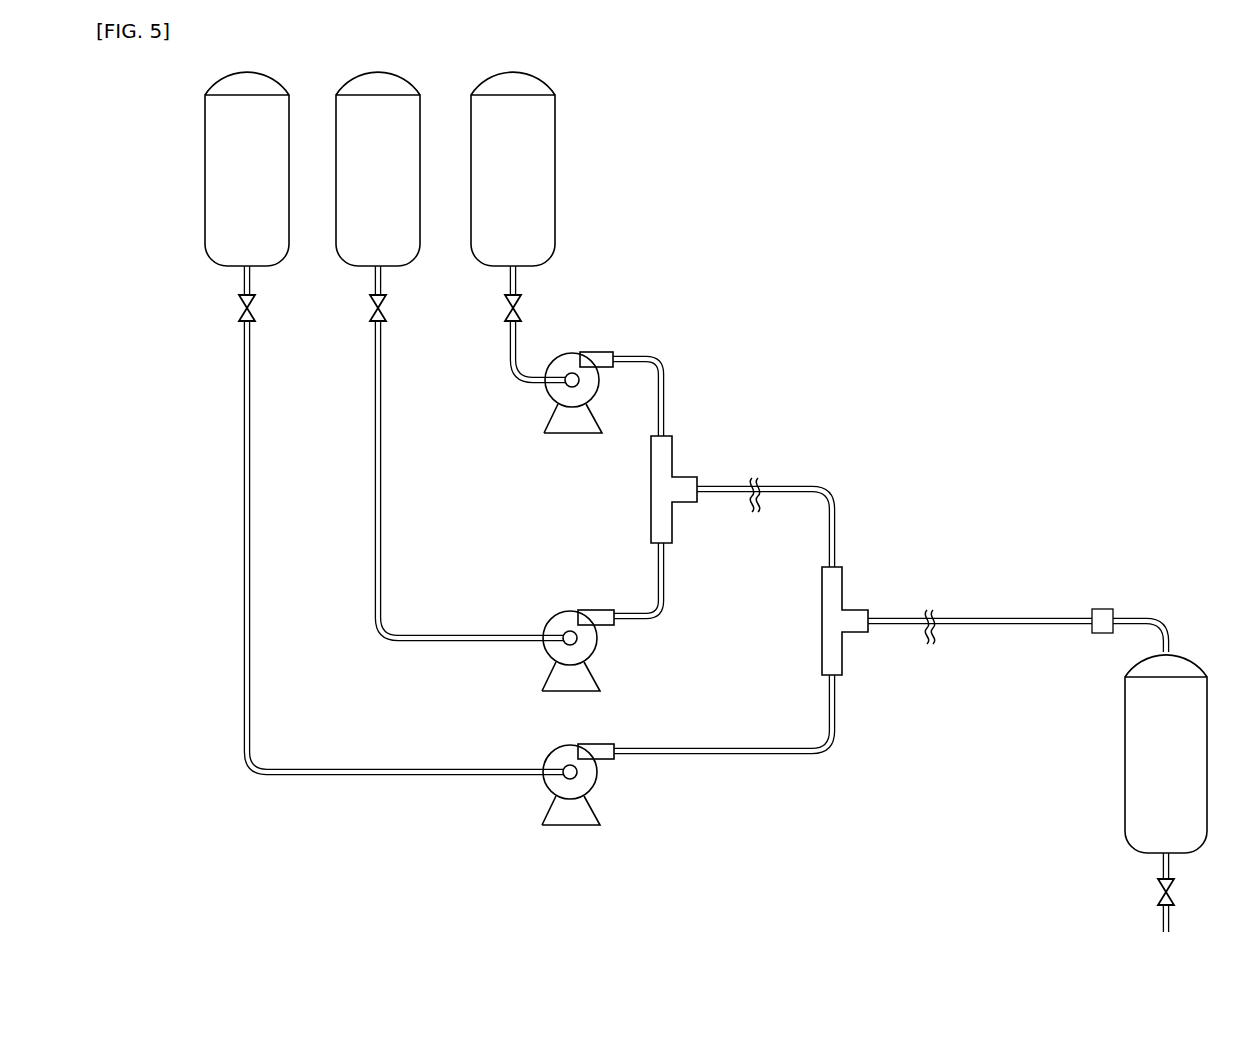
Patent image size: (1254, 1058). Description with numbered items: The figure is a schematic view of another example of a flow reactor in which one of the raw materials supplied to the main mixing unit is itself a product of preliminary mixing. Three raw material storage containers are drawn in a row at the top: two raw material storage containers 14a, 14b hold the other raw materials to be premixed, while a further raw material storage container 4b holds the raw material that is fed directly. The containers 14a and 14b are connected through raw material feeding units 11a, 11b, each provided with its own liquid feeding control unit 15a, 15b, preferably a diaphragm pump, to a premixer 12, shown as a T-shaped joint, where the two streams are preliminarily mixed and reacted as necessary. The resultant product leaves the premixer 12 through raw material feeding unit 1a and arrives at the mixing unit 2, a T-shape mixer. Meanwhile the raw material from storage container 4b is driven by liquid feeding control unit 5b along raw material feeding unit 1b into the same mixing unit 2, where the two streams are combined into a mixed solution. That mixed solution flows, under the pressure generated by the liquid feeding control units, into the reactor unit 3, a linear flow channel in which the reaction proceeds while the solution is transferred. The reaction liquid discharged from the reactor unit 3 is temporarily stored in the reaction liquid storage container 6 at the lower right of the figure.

The raw material feeding unit 1a is at (830, 497).
The raw material feeding unit 1b is at (836, 741).
The mixing unit 2 is at (843, 648).
The reactor unit 3 is at (978, 617).
The raw material storage container 4b is at (272, 266).
The liquid feeding control unit 5b is at (572, 826).
The reaction liquid storage container 6 is at (1125, 786).
The raw material feeding unit 11a is at (662, 366).
The raw material feeding unit 11b is at (660, 606).
The premixer 12 is at (672, 527).
The raw material storage container 14a is at (555, 197).
The raw material storage container 14b is at (410, 262).
The liquid feeding control unit 15a is at (572, 435).
The liquid feeding control unit 15b is at (593, 679).